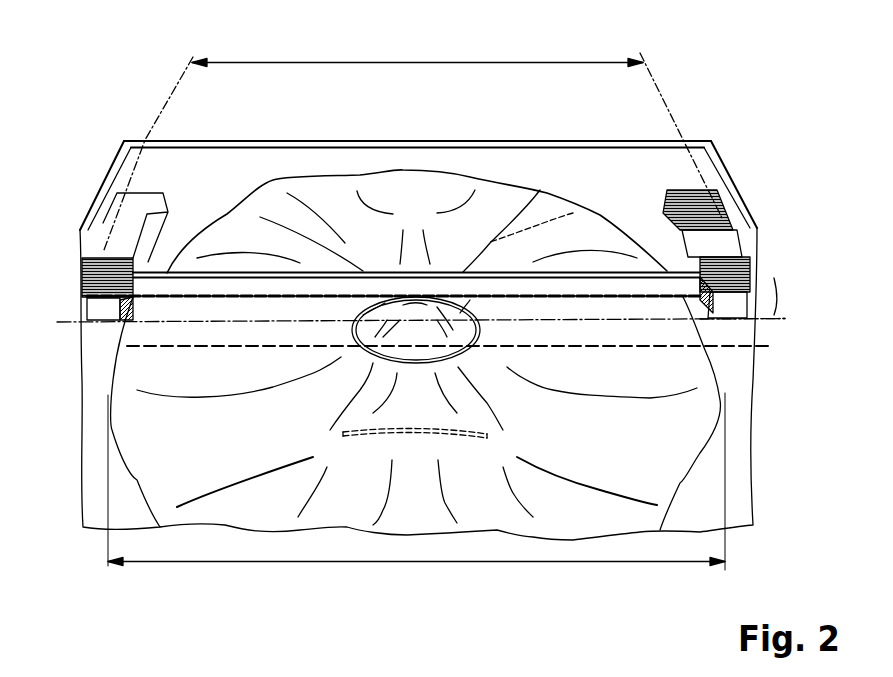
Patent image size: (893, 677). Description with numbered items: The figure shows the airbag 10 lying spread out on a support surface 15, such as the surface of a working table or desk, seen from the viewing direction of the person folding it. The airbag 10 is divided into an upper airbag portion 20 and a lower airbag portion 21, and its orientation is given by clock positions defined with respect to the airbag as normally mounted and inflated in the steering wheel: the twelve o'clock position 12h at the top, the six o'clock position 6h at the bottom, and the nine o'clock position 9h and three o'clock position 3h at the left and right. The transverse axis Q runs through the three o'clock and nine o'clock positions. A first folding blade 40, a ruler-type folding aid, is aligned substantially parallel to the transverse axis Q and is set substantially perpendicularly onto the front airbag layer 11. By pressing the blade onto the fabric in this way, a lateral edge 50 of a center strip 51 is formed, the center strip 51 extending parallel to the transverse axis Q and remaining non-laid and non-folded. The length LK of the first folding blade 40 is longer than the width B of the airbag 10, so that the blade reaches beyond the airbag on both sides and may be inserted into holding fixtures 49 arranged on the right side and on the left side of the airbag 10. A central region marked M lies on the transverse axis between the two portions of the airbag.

The airbag 10 is at (541, 182).
The front airbag layer 11 is at (238, 223).
The support surface 15 is at (647, 190).
The upper airbag portion 20 is at (477, 210).
The lower airbag portion 21 is at (360, 516).
The first folding blade 40 is at (197, 288).
The holding fixtures 49 is at (100, 243).
The lateral edge 50 is at (172, 300).
The center strip 51 is at (683, 333).
The length of the first folding blade LK is at (413, 140).
The width of the airbag B is at (416, 494).
The 12 o'clock position 12h is at (415, 130).
The 9 o'clock position 9h is at (405, 322).
The 3 o'clock position 3h is at (755, 319).
The 6 o'clock position 6h is at (415, 547).
The transverse axis Q is at (773, 283).
The center region M is at (470, 333).